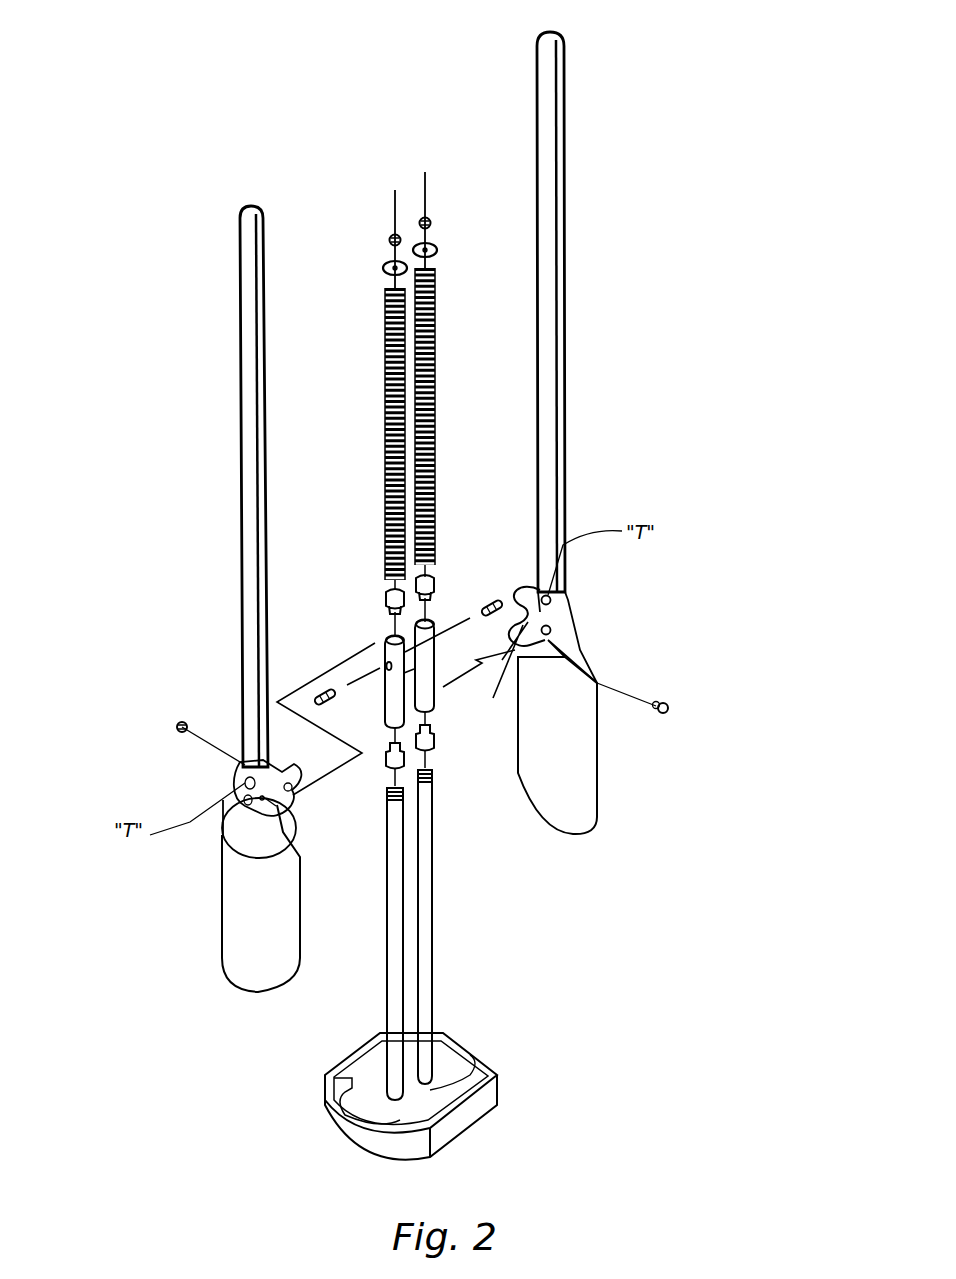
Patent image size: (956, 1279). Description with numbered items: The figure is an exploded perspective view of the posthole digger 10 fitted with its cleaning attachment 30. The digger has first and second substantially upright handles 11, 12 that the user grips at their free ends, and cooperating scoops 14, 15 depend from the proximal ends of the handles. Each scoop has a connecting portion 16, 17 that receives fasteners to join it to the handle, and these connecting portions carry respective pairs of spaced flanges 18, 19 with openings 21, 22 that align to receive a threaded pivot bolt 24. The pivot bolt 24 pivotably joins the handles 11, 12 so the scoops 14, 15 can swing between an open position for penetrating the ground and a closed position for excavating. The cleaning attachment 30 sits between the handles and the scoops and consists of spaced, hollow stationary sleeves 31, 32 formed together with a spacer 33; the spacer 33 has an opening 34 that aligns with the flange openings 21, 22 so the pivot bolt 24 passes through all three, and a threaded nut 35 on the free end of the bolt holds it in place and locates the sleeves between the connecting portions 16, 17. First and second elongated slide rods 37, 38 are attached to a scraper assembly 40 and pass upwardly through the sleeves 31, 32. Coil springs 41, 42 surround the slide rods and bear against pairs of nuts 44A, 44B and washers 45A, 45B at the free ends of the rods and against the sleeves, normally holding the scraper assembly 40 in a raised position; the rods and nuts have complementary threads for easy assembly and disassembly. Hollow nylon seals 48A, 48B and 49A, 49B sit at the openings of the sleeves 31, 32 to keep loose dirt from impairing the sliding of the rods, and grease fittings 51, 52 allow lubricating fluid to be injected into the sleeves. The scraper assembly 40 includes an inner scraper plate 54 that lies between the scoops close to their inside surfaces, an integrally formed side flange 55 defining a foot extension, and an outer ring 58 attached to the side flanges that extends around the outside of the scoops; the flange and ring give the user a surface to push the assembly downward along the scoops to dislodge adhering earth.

The posthole digger 10 is at (240, 1082).
The first handle 11 is at (252, 520).
The second handle 12 is at (555, 400).
The scoop 14 is at (262, 975).
The scoop 15 is at (560, 785).
The connecting portion 16 is at (268, 800).
The connecting portion 17 is at (567, 640).
The spaced flanges 18 is at (237, 787).
The spaced flanges 19 is at (552, 607).
The openings 21 is at (262, 798).
The openings 22 is at (503, 681).
The pivot bolt 24 is at (665, 716).
The cleaning attachment 30 is at (396, 118).
The stationary sleeve 31 is at (386, 648).
The stationary sleeve 32 is at (428, 658).
The spacer 33 is at (415, 672).
The opening 34 is at (392, 692).
The threaded nut 35 is at (181, 722).
The first slide rod 37 is at (395, 900).
The second slide rod 38 is at (430, 855).
The scraper assembly 40 is at (492, 1164).
The coil spring 41 is at (386, 385).
The coil spring 42 is at (434, 395).
The nut 44A is at (390, 238).
The nut 44B is at (430, 221).
The washer 45A is at (382, 268).
The washer 45B is at (438, 250).
The hollow nylon seal 48A is at (388, 600).
The hollow nylon seal 48B is at (395, 768).
The hollow nylon seal 49A is at (432, 580).
The hollow nylon seal 49B is at (430, 745).
The grease fitting 51 is at (323, 690).
The grease fitting 52 is at (479, 593).
The inner scraper plate 54 is at (432, 1092).
The side flange 55 is at (312, 1092).
The outer ring 58 is at (370, 1142).